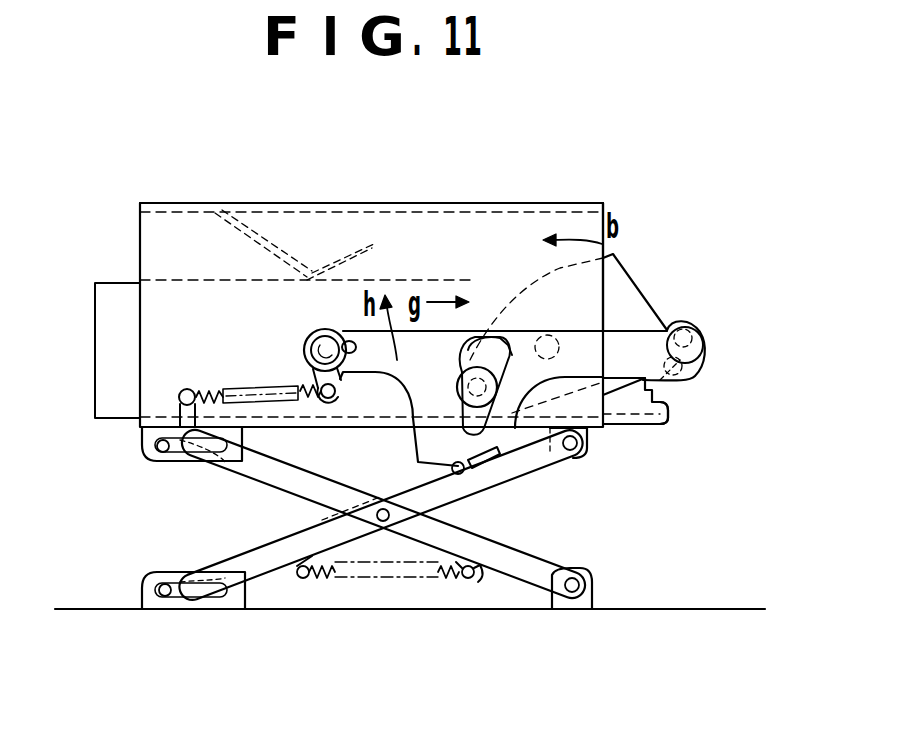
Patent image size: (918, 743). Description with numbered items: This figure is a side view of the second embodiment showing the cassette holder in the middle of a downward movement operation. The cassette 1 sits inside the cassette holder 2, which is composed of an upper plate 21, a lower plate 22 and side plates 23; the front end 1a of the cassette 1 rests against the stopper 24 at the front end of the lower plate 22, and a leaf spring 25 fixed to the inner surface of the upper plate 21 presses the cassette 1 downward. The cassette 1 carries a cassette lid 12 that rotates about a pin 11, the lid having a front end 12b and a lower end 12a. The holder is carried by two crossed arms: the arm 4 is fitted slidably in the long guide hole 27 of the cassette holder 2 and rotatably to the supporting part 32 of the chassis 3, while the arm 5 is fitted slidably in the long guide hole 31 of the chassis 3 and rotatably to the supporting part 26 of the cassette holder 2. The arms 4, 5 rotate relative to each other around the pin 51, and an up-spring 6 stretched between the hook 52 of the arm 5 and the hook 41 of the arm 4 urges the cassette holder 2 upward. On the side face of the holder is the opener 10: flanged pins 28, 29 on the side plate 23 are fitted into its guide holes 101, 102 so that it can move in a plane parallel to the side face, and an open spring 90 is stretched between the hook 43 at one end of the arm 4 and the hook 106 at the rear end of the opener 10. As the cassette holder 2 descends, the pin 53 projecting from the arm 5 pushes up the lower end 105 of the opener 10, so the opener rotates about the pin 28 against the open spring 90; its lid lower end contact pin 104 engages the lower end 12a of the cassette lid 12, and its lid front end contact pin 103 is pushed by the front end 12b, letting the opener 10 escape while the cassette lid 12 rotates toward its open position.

The cassette 1 is at (120, 300).
The front end 1a is at (667, 396).
The cassette holder 2 is at (188, 194).
The chassis 3 is at (112, 611).
The arm 4 is at (240, 468).
The arm 5 is at (492, 480).
The up-spring 6 is at (374, 590).
The opener 10 is at (402, 337).
The pin 11 is at (549, 340).
The cassette lid 12 is at (625, 290).
The lower end 12a is at (706, 356).
The front end 12b is at (665, 318).
The upper plate 21 is at (540, 203).
The lower plate 22 is at (368, 430).
The side plate 23 is at (447, 228).
The stopper 24 is at (668, 404).
The leaf spring 25 is at (292, 277).
The supporting part 26 is at (580, 456).
The long guide hole 27 is at (158, 452).
The pin 28 is at (312, 344).
The pin 29 is at (458, 381).
The long guide hole 31 is at (170, 597).
The supporting part 32 is at (572, 593).
The hook 41 is at (470, 580).
The hook 43 is at (186, 390).
The pin 51 is at (378, 523).
The hook 52 is at (300, 580).
The pin 53 is at (457, 475).
The open spring 90 is at (246, 386).
The guide hole 101 is at (338, 338).
The guide hole 102 is at (502, 352).
The lid front end contact pin 103 is at (700, 325).
The lid lower end contact pin 104 is at (690, 379).
The lower end 105 is at (490, 462).
The hook 106 is at (312, 384).